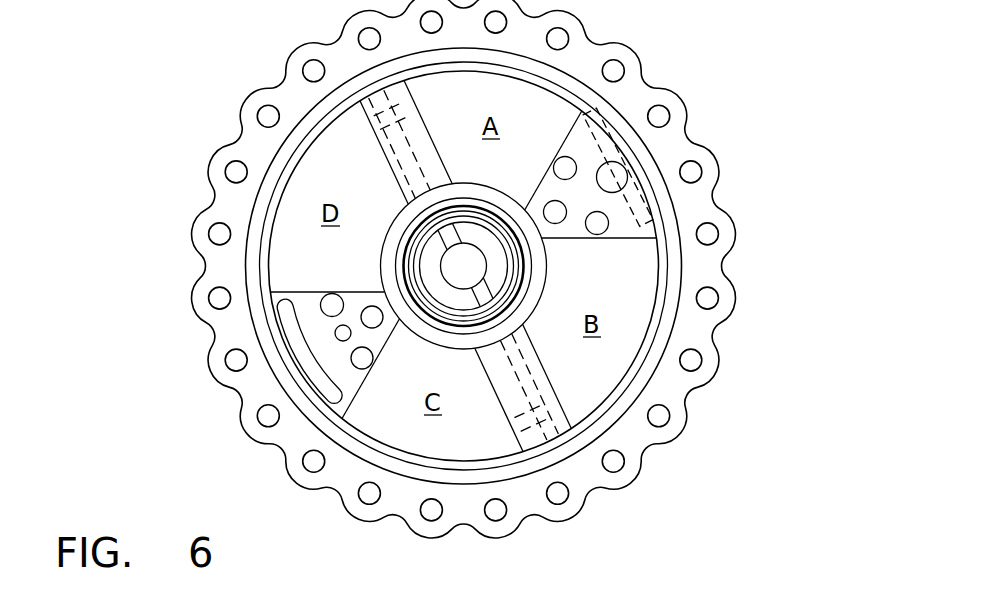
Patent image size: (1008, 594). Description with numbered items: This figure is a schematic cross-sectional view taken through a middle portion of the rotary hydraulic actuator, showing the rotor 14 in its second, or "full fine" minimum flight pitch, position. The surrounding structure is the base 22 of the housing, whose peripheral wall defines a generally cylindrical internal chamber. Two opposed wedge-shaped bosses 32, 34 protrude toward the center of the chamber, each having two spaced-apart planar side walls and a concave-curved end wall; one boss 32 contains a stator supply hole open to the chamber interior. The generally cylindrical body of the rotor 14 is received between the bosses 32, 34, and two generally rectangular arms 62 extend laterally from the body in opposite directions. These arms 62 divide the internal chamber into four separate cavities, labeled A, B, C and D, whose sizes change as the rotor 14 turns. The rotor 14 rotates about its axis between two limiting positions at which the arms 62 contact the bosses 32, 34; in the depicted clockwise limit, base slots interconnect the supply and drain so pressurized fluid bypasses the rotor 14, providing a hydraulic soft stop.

The base 22 is at (685, 136).
The rotor 14 is at (547, 291).
The arms 62 is at (437, 142).
The boss 32 is at (643, 228).
The boss 34 is at (347, 411).